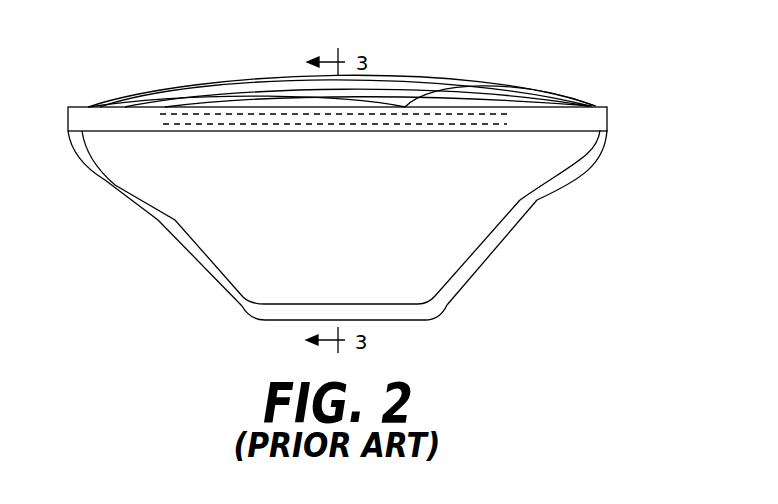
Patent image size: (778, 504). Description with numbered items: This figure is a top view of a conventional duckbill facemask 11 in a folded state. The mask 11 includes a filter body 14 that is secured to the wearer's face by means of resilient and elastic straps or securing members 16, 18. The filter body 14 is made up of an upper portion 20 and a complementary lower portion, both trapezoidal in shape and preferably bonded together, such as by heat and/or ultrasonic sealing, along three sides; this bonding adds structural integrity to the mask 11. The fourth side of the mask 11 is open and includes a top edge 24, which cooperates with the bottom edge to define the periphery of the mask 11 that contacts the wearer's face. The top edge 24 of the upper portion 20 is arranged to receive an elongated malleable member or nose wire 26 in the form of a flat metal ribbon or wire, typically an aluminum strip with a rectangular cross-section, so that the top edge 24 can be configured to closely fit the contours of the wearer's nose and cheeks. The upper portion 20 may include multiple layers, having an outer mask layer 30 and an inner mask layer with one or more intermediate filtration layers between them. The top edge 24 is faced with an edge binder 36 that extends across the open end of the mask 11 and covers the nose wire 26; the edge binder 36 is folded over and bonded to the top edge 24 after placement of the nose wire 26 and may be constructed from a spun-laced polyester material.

The facemask 11 is at (356, 235).
The filter body 14 is at (477, 272).
The securing member 16 is at (243, 74).
The securing member 18 is at (463, 77).
The upper portion 20 is at (517, 168).
The top edge 24 is at (405, 105).
The nose wire 26 is at (280, 140).
The outer mask layer 30 is at (235, 255).
The edge binder 36 is at (468, 131).